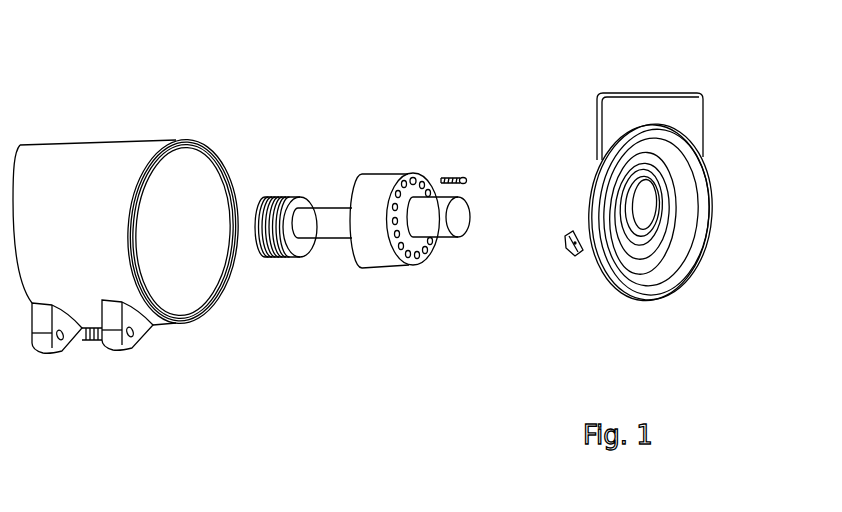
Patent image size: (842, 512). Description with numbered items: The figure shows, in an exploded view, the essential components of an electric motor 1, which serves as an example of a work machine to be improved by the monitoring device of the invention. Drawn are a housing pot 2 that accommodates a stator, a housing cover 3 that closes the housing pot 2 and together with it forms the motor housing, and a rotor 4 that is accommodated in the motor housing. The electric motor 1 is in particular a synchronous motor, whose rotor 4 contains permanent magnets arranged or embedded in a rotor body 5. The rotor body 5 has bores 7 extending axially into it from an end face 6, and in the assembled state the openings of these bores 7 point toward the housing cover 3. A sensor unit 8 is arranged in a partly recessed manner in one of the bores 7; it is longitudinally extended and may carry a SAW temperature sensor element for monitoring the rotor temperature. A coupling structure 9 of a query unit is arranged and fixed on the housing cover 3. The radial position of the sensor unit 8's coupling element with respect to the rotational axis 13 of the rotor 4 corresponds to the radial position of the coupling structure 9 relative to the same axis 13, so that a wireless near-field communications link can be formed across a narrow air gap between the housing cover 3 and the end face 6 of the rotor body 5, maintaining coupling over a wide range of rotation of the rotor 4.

The electric motor 1 is at (340, 357).
The housing pot 2 is at (95, 157).
The housing cover 3 is at (690, 130).
The rotor 4 is at (318, 268).
The rotor body 5 is at (396, 262).
The end face 6 is at (431, 257).
The bores 7 is at (433, 197).
The sensor unit 8 is at (454, 177).
The coupling structure 9 is at (575, 256).
The rotational axis 13 is at (335, 208).